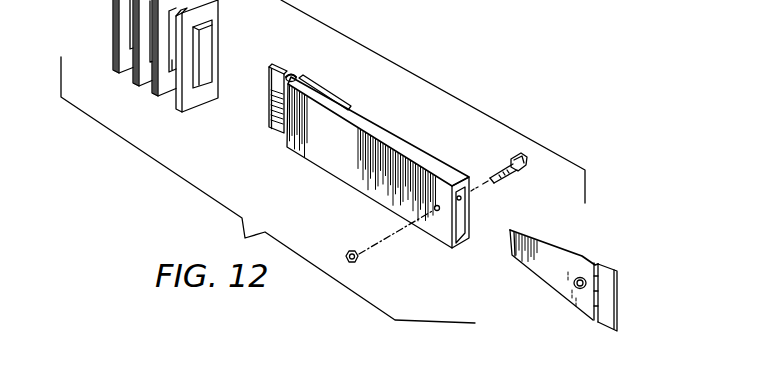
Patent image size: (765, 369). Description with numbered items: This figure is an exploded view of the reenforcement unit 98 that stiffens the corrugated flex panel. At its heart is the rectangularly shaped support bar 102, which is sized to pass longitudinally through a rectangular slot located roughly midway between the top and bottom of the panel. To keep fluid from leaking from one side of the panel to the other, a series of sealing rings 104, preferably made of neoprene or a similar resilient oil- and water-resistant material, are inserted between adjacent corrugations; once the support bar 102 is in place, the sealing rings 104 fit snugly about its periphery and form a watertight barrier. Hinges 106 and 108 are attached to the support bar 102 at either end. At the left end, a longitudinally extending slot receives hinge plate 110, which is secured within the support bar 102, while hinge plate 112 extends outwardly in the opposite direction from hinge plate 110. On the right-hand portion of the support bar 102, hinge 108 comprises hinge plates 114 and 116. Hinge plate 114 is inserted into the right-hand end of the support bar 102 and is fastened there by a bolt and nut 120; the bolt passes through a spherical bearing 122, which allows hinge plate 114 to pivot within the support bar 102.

The reenforcement unit 98 is at (388, 60).
The support bar 102 is at (377, 141).
The sealing rings 104 is at (169, 97).
The hinge 106 is at (289, 74).
The hinge 108 is at (588, 263).
The hinge plate 110 is at (329, 94).
The hinge plate 112 is at (271, 66).
The hinge plate 114 is at (545, 253).
The hinge plate 116 is at (606, 292).
The nut 120 is at (357, 263).
The spherical bearing 122 is at (575, 285).